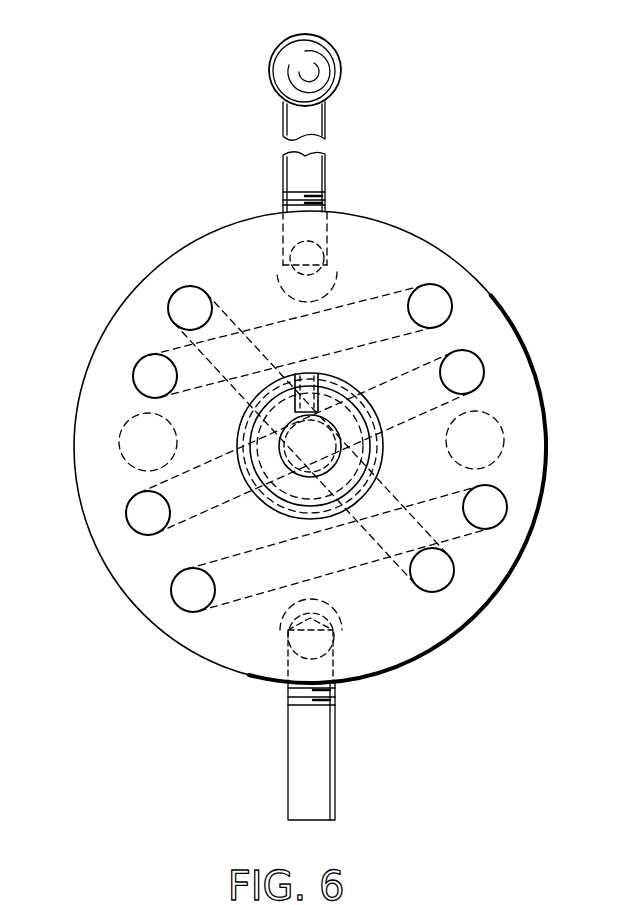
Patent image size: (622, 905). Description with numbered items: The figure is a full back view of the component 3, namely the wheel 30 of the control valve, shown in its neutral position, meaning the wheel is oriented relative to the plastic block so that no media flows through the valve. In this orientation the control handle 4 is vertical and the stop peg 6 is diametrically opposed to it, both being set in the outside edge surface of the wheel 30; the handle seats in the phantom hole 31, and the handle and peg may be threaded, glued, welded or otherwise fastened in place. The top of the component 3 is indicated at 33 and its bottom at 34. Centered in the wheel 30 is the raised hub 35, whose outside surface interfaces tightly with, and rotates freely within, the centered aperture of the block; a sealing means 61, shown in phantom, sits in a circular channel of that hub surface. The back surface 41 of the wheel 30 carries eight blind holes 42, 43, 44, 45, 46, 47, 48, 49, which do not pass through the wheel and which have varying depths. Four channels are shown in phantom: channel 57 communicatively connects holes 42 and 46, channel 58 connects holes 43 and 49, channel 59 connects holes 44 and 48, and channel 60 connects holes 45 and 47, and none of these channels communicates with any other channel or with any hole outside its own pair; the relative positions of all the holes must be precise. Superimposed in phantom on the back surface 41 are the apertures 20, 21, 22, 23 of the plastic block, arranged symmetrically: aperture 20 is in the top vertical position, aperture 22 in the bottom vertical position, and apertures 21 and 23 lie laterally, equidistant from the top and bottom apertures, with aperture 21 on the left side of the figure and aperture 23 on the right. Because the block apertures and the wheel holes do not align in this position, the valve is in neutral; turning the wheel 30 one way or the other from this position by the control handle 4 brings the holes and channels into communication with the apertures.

The component 3 is at (470, 250).
The control handle 4 is at (316, 120).
The stop peg 6 is at (333, 752).
The aperture 20 is at (270, 262).
The aperture 21 is at (118, 445).
The aperture 22 is at (345, 620).
The aperture 23 is at (504, 437).
The wheel 30 is at (334, 447).
The hole 31 is at (354, 220).
The top of the component 33 is at (278, 206).
The bottom of the component 34 is at (283, 693).
The raised hub 35 is at (285, 457).
The back surface 41 is at (400, 632).
The hole 42 is at (170, 300).
The hole 43 is at (134, 380).
The hole 44 is at (131, 523).
The hole 45 is at (181, 607).
The hole 46 is at (449, 585).
The hole 47 is at (507, 506).
The hole 48 is at (484, 374).
The hole 49 is at (449, 298).
The channel 57 is at (232, 318).
The channel 58 is at (363, 306).
The channel 59 is at (193, 502).
The channel 60 is at (336, 568).
The sealing means 61 is at (243, 421).